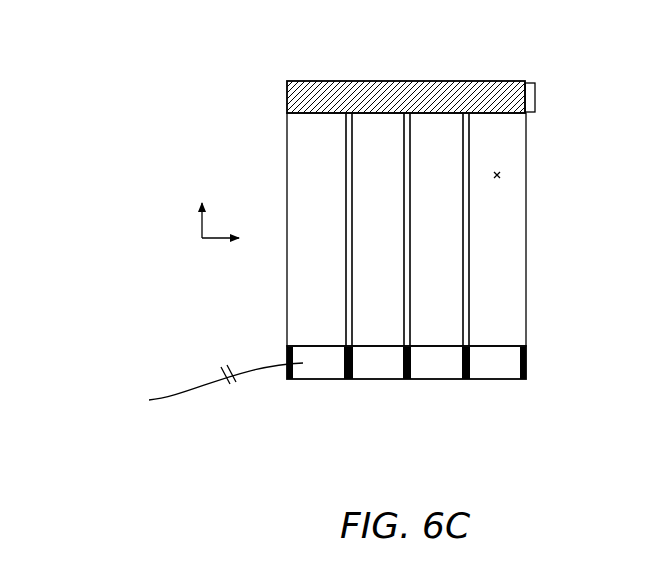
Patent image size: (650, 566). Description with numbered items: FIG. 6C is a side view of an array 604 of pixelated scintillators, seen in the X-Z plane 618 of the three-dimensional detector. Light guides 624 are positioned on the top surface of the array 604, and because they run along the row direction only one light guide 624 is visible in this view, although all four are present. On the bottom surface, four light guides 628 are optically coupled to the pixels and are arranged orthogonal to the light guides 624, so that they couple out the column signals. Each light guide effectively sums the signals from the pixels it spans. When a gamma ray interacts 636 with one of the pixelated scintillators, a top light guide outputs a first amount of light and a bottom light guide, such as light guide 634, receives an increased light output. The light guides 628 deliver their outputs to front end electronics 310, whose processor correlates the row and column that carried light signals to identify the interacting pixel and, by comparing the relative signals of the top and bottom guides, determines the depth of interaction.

The array 604 is at (280, 176).
The light guides 624 is at (320, 80).
The light guides 628 is at (495, 380).
The light guide 634 is at (510, 380).
The gamma ray interaction 636 is at (497, 180).
The X-Z plane 618 is at (218, 240).
The front end electronics 310 is at (169, 360).